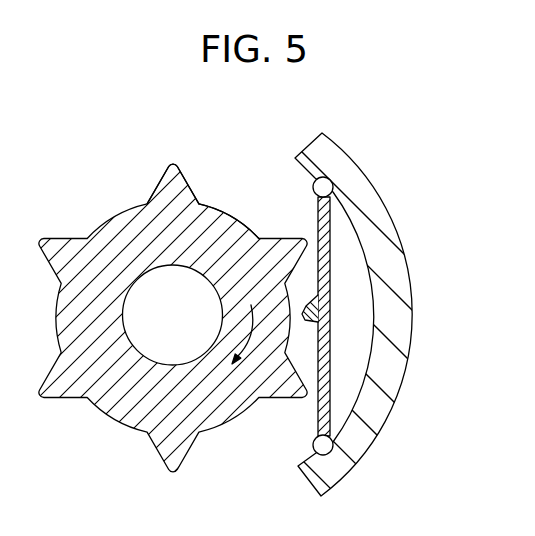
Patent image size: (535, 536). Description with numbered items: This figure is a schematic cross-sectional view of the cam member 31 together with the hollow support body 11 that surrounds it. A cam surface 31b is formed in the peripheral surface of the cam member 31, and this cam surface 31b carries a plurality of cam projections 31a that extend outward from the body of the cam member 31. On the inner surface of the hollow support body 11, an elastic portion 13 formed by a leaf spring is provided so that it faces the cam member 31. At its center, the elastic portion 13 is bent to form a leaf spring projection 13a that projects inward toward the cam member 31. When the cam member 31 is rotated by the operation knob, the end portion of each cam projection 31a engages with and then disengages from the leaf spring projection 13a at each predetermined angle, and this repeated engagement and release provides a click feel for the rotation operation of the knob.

The cam member 31 is at (267, 282).
The cam projection 31a is at (168, 178).
The cam surface 31b is at (237, 218).
The elastic portion 13 is at (399, 320).
The leaf spring projection 13a is at (322, 284).
The hollow support body 11 is at (400, 327).